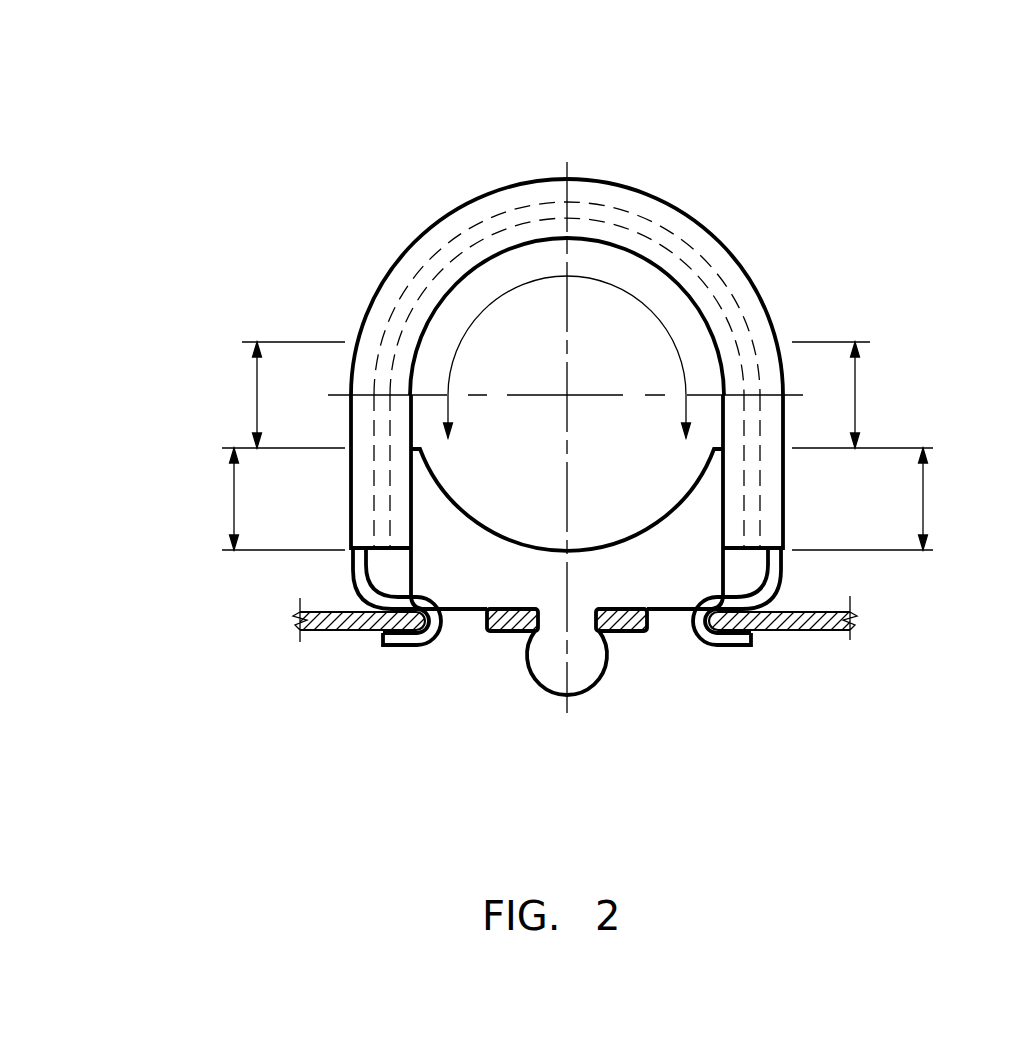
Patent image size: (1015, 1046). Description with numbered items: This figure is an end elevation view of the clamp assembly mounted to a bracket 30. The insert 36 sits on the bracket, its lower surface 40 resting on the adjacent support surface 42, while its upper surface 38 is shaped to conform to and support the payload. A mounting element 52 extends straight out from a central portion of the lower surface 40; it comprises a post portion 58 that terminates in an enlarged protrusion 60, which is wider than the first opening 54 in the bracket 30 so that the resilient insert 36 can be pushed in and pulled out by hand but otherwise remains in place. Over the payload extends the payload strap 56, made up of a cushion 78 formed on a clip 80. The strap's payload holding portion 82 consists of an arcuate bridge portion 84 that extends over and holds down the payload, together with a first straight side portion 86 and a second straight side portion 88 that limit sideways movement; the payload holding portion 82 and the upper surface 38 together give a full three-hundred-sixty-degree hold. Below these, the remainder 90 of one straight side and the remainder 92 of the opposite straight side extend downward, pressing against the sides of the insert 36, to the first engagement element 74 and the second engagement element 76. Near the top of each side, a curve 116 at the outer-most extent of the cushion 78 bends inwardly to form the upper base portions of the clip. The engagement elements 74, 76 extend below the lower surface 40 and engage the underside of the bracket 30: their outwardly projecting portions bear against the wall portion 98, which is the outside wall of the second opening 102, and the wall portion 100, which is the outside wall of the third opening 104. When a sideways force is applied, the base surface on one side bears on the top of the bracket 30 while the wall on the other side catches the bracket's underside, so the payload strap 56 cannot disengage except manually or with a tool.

The bracket 30 is at (305, 632).
The insert 36 is at (440, 645).
The upper surface 38 is at (435, 507).
The lower surface 40 is at (665, 612).
The adjacent support surface 42 is at (512, 610).
The mounting element 52 is at (547, 698).
The first opening 54 is at (532, 633).
The payload strap 56 is at (388, 265).
The post portion 58 is at (591, 615).
The enlarged protrusion 60 is at (585, 695).
The first engagement element 74 is at (793, 578).
The second engagement element 76 is at (347, 578).
The cushion 78 is at (737, 257).
The clip 80 is at (735, 317).
The payload holding portion 82 is at (642, 298).
The bridge portion 84 is at (468, 200).
The first straight side portion 86 is at (857, 391).
The second straight side portion 88 is at (255, 394).
The remainder of the straight side 90 is at (925, 493).
The remainder of the opposite straight side 92 is at (232, 492).
The wall portion 98 is at (718, 623).
The wall portion 100 is at (357, 628).
The second opening 102 is at (655, 635).
The third opening 104 is at (483, 633).
The curve 116 is at (822, 631).